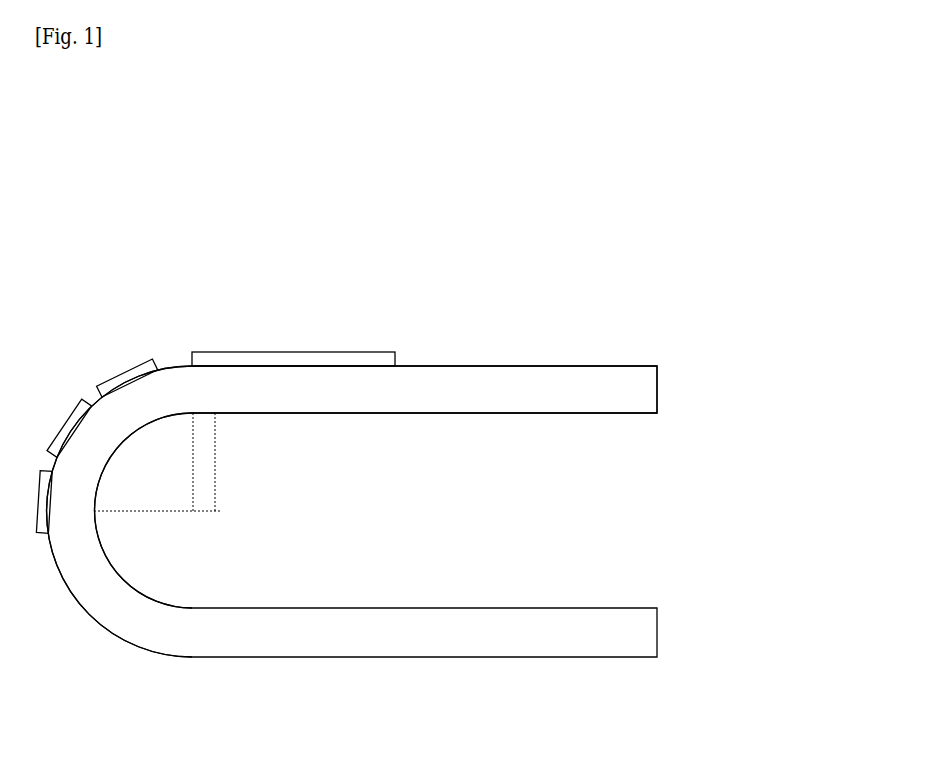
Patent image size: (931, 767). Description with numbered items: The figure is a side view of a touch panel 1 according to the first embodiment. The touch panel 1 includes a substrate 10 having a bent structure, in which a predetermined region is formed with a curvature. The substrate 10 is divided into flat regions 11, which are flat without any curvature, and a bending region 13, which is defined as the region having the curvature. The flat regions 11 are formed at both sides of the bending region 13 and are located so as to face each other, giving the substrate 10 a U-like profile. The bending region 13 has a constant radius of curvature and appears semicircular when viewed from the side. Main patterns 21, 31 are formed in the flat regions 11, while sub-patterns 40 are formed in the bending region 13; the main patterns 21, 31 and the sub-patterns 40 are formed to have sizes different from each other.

The touch panel 1 is at (476, 108).
The substrate 10 is at (657, 393).
The flat regions 11 is at (550, 367).
The bending region 13 is at (124, 611).
The main pattern 21 is at (293, 296).
The main pattern 31 is at (270, 352).
The sub-patterns 40 is at (127, 372).